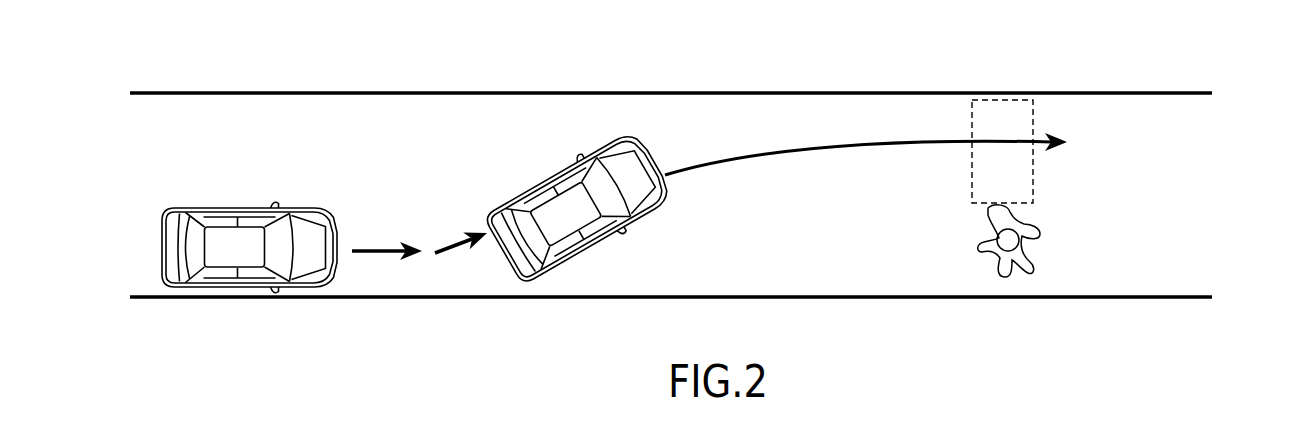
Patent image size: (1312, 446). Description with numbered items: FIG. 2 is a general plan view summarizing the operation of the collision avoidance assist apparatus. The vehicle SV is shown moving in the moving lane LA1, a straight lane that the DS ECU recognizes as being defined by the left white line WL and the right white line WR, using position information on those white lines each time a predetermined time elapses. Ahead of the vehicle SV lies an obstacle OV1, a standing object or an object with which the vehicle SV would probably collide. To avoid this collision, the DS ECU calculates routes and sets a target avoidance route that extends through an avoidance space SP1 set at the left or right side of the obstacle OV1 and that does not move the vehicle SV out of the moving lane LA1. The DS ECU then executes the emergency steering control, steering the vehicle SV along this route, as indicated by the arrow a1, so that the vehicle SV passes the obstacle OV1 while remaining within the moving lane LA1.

The vehicle SV is at (225, 206).
The arrow a1 is at (447, 244).
The left white line WL is at (853, 90).
The right white line WR is at (868, 300).
The moving lane LA1 is at (1200, 141).
The avoidance space SP1 is at (1035, 180).
The obstacle OV1 is at (996, 231).